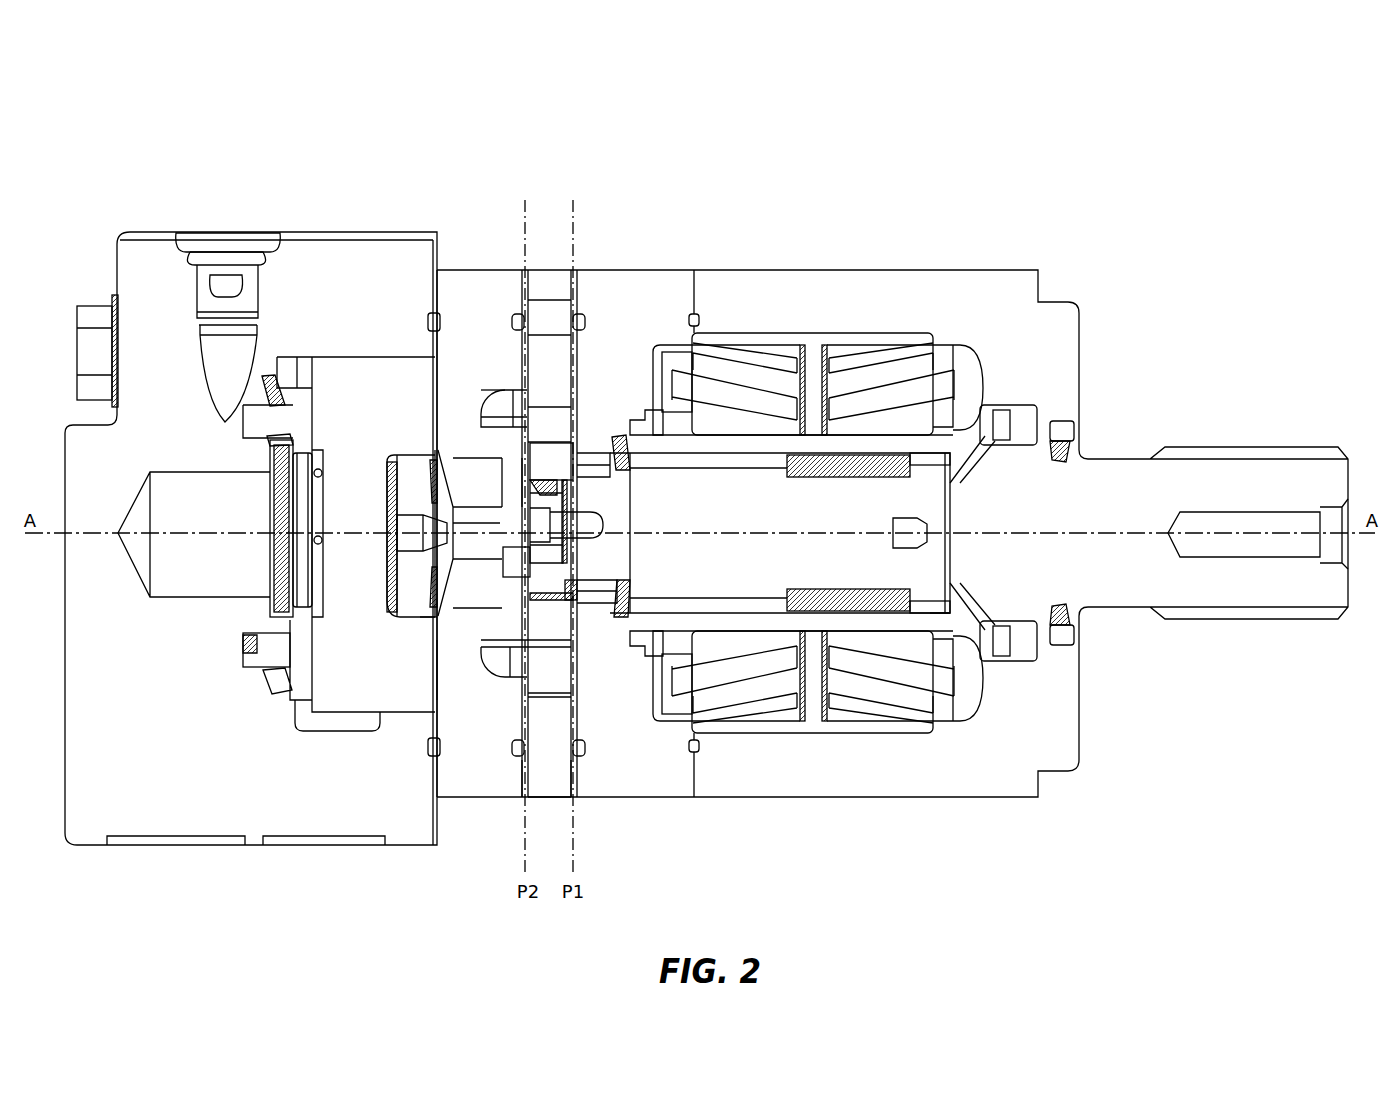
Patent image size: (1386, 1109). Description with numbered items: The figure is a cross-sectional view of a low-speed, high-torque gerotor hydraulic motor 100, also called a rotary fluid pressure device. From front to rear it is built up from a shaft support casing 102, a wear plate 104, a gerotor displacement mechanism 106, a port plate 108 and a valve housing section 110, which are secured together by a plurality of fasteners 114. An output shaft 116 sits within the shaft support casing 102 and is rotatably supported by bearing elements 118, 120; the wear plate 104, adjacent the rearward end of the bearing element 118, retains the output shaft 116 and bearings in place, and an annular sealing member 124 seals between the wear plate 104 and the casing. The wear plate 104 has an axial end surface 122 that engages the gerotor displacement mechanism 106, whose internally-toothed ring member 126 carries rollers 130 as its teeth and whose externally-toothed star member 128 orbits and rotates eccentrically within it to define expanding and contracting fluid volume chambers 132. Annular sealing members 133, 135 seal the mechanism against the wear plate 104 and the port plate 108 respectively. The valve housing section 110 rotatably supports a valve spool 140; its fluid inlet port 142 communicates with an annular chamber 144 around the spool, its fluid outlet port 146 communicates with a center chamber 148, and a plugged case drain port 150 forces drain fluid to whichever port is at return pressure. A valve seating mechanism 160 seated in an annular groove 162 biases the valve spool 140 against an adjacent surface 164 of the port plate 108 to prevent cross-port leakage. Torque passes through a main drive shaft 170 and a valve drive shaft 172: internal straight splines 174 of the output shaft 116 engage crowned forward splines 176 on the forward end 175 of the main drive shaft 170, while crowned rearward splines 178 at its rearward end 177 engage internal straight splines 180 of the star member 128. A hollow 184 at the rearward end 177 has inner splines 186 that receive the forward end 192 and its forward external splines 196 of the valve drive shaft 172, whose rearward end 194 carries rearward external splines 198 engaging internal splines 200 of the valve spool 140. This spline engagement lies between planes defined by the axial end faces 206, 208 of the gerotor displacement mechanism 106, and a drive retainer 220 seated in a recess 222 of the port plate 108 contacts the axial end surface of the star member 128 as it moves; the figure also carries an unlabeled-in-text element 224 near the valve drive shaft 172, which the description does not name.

The gerotor hydraulic motor 100 is at (183, 122).
The shaft support casing 102 is at (1000, 285).
The wear plate 104 is at (618, 282).
The gerotor displacement mechanism 106 is at (548, 280).
The port plate 108 is at (477, 280).
The valve housing section 110 is at (332, 243).
The fasteners 114 is at (97, 326).
The output shaft 116 is at (1295, 470).
The bearing element 118 is at (752, 343).
The bearing element 120 is at (857, 343).
The axial end surface 122 is at (566, 772).
The annular sealing member 124 is at (700, 314).
The ring member 126 is at (553, 293).
The star member 128 is at (557, 423).
The rollers 130 is at (557, 667).
The fluid volume chambers 132 is at (543, 375).
The annular sealing member 133 is at (584, 322).
The annular sealing member 135 is at (514, 318).
The valve spool 140 is at (365, 370).
The fluid inlet port 142 is at (345, 845).
The annular chamber 144 is at (303, 357).
The fluid outlet port 146 is at (170, 505).
The center chamber 148 is at (298, 513).
The case drain port 150 is at (225, 280).
The valve seating mechanism 160 is at (267, 652).
The annular groove 162 is at (250, 653).
The adjacent surface 164 is at (422, 672).
The main drive shaft 170 is at (688, 505).
The valve drive shaft 172 is at (453, 513).
The internal straight splines 174 is at (855, 463).
The forward end 175 is at (937, 618).
The forward splines 176 is at (928, 472).
The rearward end 177 is at (528, 612).
The rearward splines 178 is at (557, 457).
The internal straight splines 180 is at (572, 600).
The hollow 184 is at (565, 490).
The inner splines 186 is at (548, 490).
The forward end 192 is at (554, 571).
The rearward end 194 is at (430, 621).
The forward external splines 196 is at (556, 569).
The rearward external splines 198 is at (408, 457).
The internal splines 200 is at (395, 598).
The axial end face 206 is at (579, 790).
The axial end face 208 is at (518, 785).
The drive retainer 220 is at (508, 465).
The recess 222 is at (508, 610).
The rod 224 is at (497, 556).